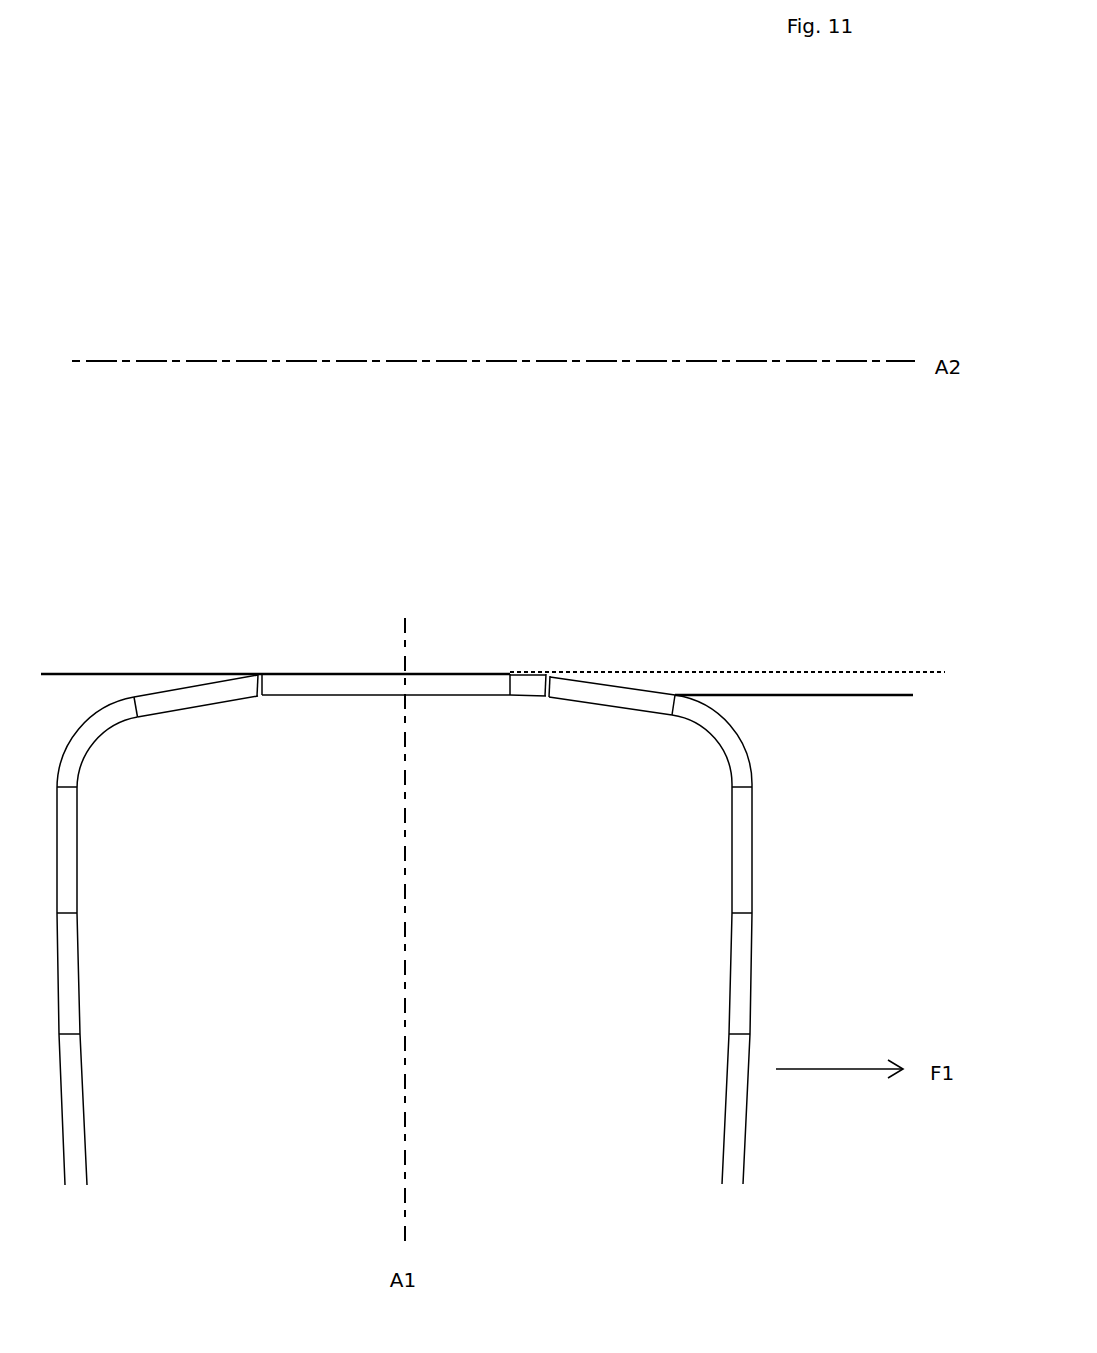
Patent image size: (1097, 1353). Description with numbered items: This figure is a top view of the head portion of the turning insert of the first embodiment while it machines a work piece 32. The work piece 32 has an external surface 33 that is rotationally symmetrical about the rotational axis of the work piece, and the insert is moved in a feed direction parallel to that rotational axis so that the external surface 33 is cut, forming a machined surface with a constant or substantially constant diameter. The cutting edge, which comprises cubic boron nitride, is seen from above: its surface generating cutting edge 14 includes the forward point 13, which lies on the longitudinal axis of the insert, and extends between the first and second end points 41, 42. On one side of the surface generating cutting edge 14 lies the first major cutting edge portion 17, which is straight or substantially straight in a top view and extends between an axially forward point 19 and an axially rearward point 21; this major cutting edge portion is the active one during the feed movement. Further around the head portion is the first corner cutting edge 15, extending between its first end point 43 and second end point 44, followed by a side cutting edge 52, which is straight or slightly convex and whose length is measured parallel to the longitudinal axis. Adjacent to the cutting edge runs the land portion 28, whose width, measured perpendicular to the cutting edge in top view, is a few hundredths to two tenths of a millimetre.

The forward point 13 is at (406, 673).
The surface generating cutting edge 14 is at (358, 673).
The first corner cutting edge 15 is at (750, 760).
The first major cutting edge portion 17 is at (627, 688).
The axially forward point 19 is at (554, 684).
The axially rearward point 21 is at (675, 695).
The land portion 28 is at (735, 1136).
The work piece 32 is at (867, 638).
The external surface 33 is at (785, 697).
The first end point 41 is at (508, 673).
The second end point 42 is at (300, 673).
The first end point 43 is at (675, 695).
The second end point 44 is at (752, 787).
The side cutting edge 52 is at (752, 870).